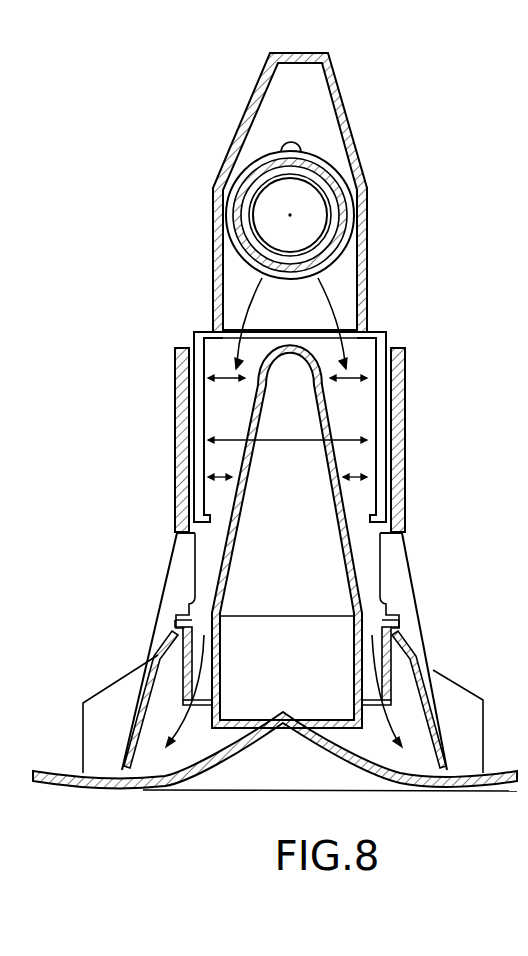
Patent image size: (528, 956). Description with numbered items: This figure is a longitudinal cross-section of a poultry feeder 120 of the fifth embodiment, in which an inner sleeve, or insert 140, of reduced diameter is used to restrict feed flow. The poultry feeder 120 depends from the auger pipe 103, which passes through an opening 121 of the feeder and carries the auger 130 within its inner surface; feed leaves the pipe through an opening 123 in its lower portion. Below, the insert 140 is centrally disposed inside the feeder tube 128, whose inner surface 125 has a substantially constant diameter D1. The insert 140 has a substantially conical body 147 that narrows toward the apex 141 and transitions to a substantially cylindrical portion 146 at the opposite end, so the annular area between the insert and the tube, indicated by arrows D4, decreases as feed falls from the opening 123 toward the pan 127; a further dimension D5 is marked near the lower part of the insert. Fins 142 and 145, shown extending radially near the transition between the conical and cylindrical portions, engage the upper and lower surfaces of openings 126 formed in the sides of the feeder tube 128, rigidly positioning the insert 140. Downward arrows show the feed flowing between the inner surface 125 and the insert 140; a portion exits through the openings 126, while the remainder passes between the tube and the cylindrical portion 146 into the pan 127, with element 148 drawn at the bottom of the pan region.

The poultry feeder 120 is at (346, 90).
The auger pipe 103 is at (240, 180).
The opening 121 is at (347, 182).
The auger 130 is at (327, 235).
The opening 123 is at (270, 262).
The apex 141 is at (196, 371).
The feeder tube 128 is at (373, 400).
The inner surface 125 is at (405, 385).
The arrows indicating annular cross-sectional area D4 is at (215, 381).
The diameter D1 is at (287, 427).
The dimension D5 is at (208, 478).
The insert 140 is at (356, 524).
The conical body 147 is at (303, 578).
The openings 126 is at (190, 542).
The fin 142 is at (207, 578).
The fin 145 is at (367, 583).
The cylindrical portion 146 is at (395, 635).
The pan 127 is at (62, 770).
The base plane 148 is at (203, 776).